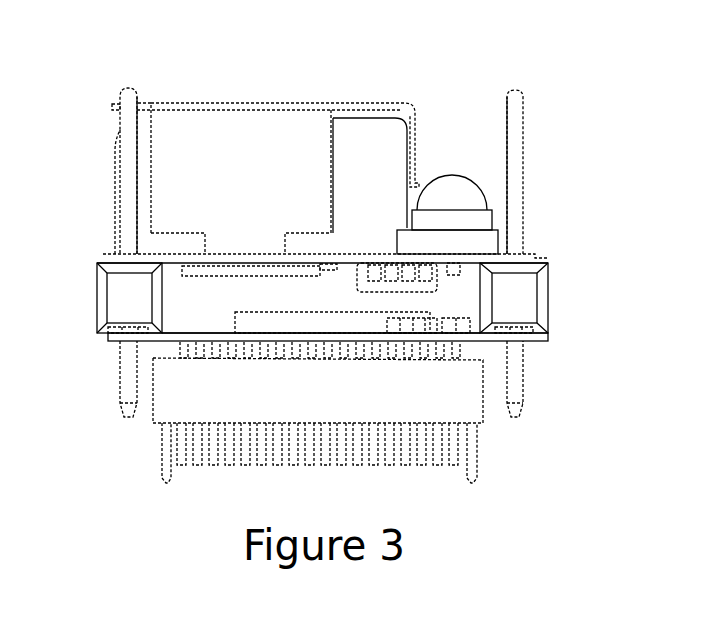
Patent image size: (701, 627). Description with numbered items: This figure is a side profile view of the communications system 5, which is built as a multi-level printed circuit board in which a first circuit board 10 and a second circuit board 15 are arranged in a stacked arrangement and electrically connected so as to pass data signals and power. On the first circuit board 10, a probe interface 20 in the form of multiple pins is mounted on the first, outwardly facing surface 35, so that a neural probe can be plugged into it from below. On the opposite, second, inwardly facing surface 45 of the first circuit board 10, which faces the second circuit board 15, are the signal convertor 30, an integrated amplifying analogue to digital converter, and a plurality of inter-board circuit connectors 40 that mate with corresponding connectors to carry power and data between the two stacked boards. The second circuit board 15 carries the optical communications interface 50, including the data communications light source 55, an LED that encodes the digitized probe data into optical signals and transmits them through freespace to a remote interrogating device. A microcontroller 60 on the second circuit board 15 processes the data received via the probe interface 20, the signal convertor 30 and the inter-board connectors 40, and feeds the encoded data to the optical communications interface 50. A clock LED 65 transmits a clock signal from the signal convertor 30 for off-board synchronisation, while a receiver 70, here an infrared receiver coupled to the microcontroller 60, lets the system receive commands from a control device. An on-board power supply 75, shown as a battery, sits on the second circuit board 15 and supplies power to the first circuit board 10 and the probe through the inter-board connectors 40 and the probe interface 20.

The communications system 5 is at (80, 113).
The first circuit board 10 is at (535, 335).
The second circuit board 15 is at (535, 258).
The probe interface 20 is at (418, 467).
The signal convertor 30 is at (275, 312).
The first (outwardly facing) surface 35 is at (152, 342).
The inter-board circuit connectors 40 is at (125, 185).
The second (inwardly facing) surface 45 is at (170, 330).
The optical communications interface 50 is at (445, 178).
The data communications light source 55 is at (470, 200).
The microcontroller 60 is at (240, 277).
The clock LED 65 is at (475, 205).
The receiver 70 is at (485, 243).
The on-board power supply 75 is at (322, 150).